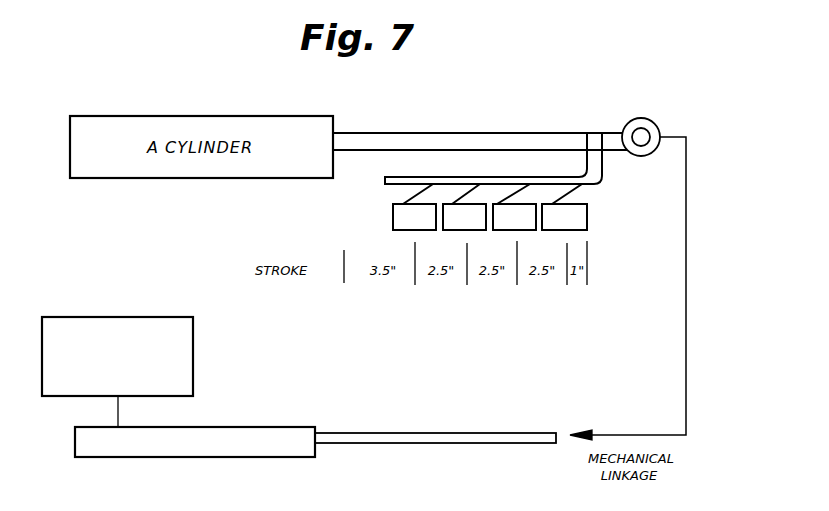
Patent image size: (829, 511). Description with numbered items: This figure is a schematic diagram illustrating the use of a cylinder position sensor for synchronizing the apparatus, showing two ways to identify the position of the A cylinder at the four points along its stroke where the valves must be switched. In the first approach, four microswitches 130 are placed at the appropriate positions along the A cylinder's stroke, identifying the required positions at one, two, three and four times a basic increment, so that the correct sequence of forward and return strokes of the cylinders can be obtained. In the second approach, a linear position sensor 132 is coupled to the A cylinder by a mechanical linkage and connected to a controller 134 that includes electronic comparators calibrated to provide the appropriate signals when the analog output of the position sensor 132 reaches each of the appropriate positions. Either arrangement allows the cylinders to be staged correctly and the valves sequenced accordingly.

The microswitches 130 is at (600, 230).
The linear position sensor 132 is at (293, 426).
The controller 134 is at (193, 389).